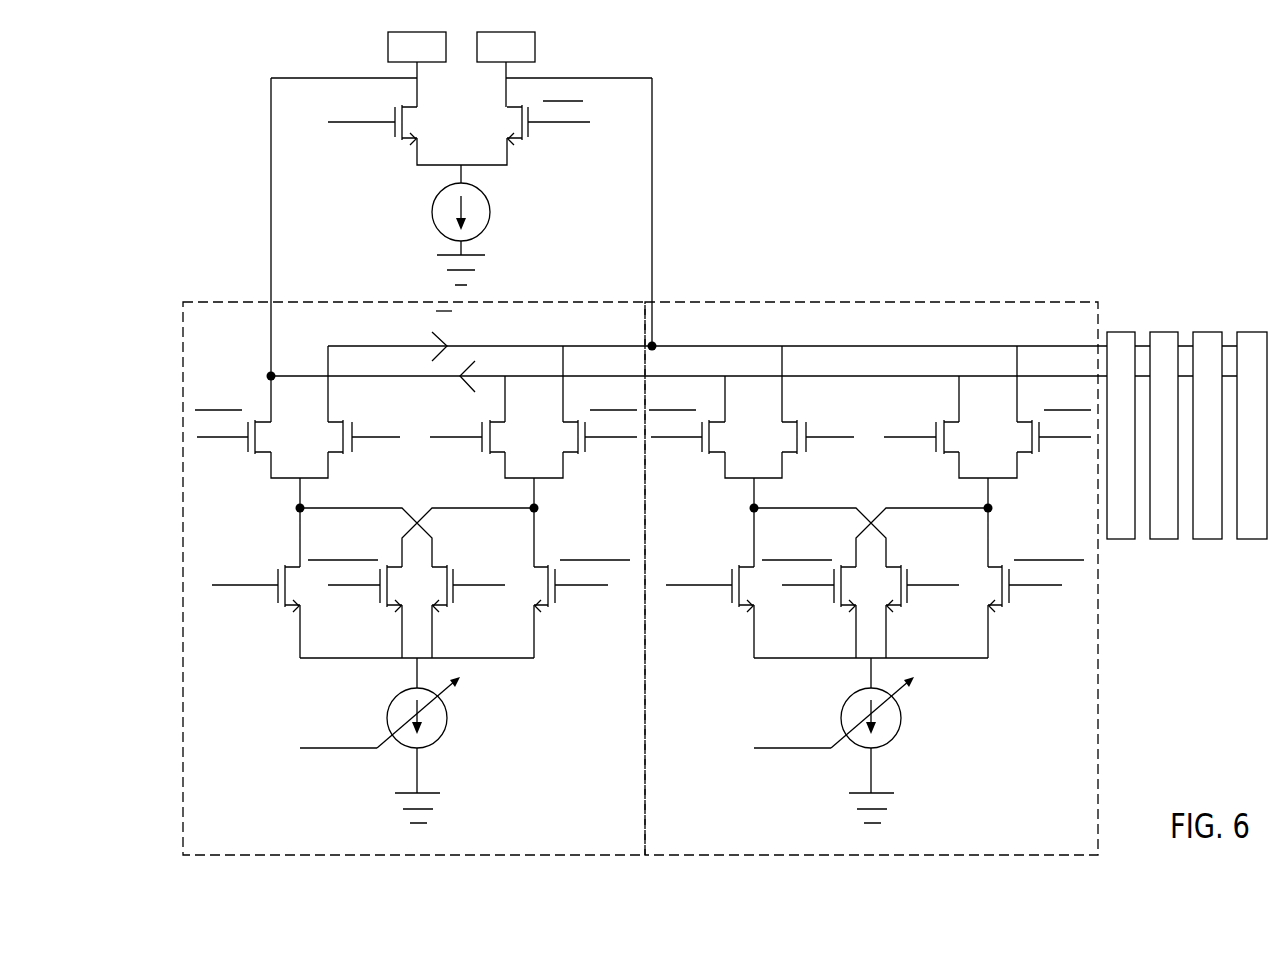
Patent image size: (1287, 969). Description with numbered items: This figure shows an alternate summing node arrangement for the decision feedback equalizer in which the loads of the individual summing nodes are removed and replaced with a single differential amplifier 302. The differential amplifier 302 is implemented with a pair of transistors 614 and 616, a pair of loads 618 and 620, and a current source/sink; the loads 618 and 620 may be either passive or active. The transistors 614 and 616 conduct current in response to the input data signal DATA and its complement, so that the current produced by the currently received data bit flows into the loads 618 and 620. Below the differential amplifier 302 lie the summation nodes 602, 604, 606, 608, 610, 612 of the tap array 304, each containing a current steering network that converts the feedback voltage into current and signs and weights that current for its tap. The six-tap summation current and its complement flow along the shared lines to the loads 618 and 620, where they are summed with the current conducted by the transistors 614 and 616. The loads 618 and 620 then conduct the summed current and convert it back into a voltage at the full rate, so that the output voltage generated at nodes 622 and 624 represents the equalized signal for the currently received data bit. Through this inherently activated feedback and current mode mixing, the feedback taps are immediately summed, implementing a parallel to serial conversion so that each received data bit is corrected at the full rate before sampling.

The differential amplifier 302 is at (680, 32).
The weighted tap summing stage 304 is at (1232, 192).
The summation node 602 is at (535, 302).
The summation node 604 is at (997, 302).
The summation node 606 is at (1120, 332).
The summation node 608 is at (1167, 541).
The summation node 610 is at (1208, 332).
The summation node 612 is at (1255, 541).
The transistor 614 is at (419, 121).
The transistor 616 is at (505, 127).
The load 618 is at (387, 36).
The load 620 is at (535, 36).
The node 622 is at (266, 376).
The node 624 is at (656, 343).